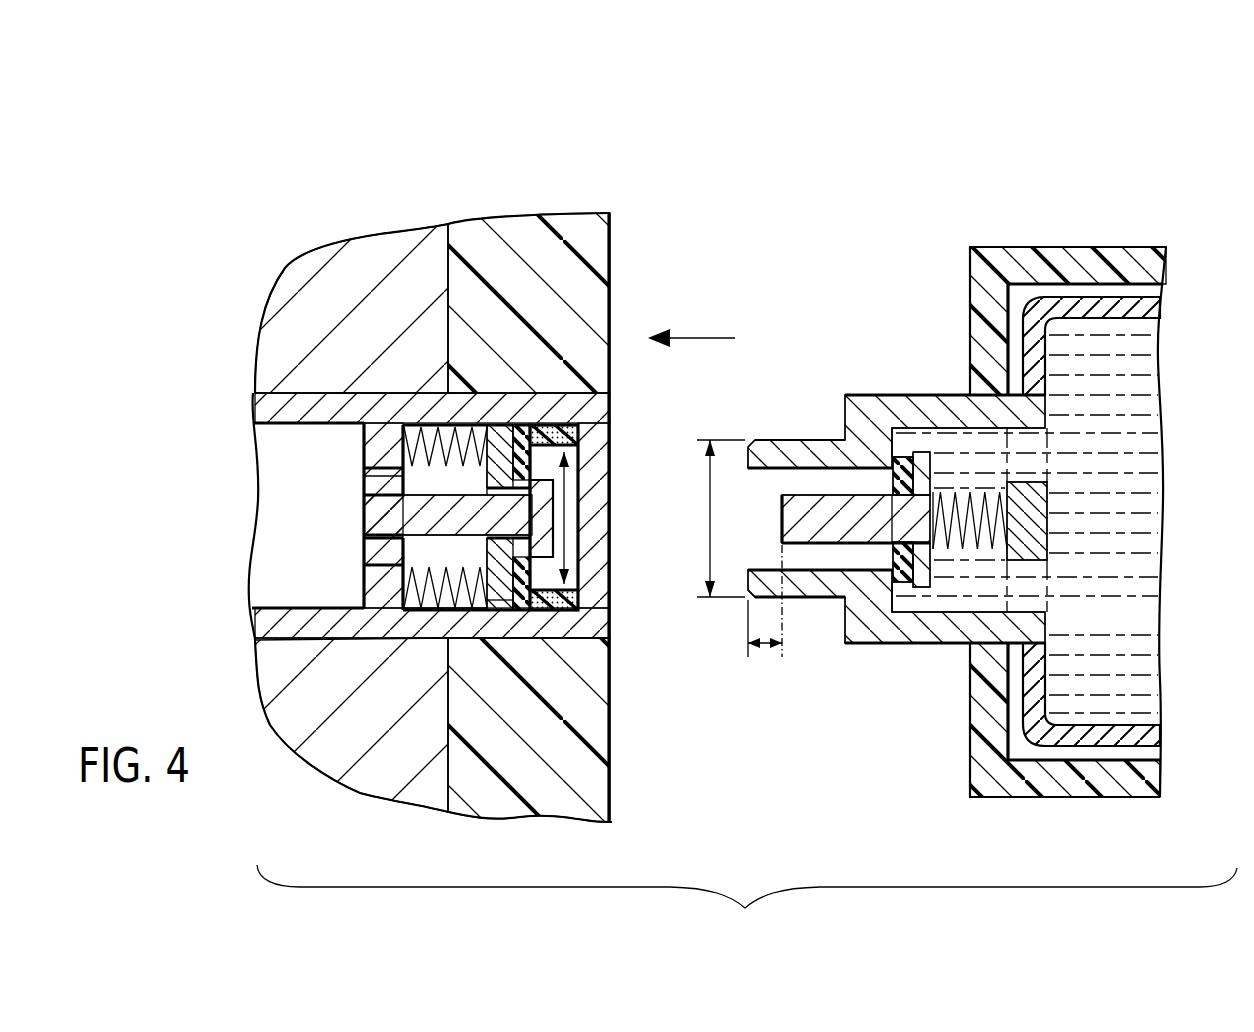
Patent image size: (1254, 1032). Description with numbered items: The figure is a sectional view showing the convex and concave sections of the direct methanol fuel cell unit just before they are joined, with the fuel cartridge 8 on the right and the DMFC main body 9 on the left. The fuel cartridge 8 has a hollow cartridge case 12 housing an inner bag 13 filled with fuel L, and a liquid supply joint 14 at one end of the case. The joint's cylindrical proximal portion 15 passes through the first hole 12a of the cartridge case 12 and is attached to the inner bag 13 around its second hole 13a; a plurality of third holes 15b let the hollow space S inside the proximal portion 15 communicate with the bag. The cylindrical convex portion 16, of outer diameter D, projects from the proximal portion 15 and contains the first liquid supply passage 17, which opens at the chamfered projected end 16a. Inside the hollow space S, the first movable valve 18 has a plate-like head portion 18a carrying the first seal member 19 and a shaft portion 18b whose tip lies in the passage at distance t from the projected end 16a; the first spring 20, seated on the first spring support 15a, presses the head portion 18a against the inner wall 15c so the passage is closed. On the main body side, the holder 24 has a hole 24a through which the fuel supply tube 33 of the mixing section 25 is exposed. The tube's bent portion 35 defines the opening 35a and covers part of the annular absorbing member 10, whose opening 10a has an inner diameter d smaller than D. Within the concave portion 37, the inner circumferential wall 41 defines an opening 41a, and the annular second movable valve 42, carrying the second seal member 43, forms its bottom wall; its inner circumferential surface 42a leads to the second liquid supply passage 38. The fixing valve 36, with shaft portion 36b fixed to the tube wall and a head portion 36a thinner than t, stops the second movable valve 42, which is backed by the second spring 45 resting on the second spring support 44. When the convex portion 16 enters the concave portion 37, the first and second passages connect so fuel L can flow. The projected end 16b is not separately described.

The fuel cartridge 8 is at (1172, 162).
The DMFC main body 9 is at (399, 128).
The absorbing member 10 is at (560, 424).
The opening 10a is at (573, 586).
The cartridge case 12 is at (1072, 247).
The first hole 12a is at (990, 650).
The inner bag 13 is at (1136, 296).
The second hole 13a is at (1047, 657).
The liquid supply joint 14 is at (867, 393).
The proximal portion 15 is at (917, 393).
The first spring support 15a is at (1035, 497).
The third holes 15b is at (1040, 447).
The inner wall 15c is at (915, 600).
The convex portion 16 is at (815, 441).
The projected end 16a is at (748, 583).
The flange end face 16b is at (822, 600).
The first liquid supply passage 17 is at (762, 490).
The first movable valve 18 is at (867, 494).
The head portion 18a is at (920, 456).
The shaft portion 18b is at (873, 543).
The first seal member 19 is at (900, 456).
The first spring 20 is at (972, 548).
The holder 24 is at (552, 219).
The hole 24a is at (575, 388).
The mixing section 25 is at (327, 247).
The fuel supply tube 33 is at (493, 393).
The bent portion 35 is at (598, 625).
The opening 35a is at (588, 592).
The fixing valve 36 is at (472, 501).
The head portion 36a is at (545, 494).
The shaft portion 36b is at (374, 513).
The concave portion 37 is at (545, 421).
The second liquid supply passage 38 is at (378, 560).
The inner circumferential wall 41 is at (552, 610).
The opening 41a is at (575, 640).
The second movable valve 42 is at (497, 610).
The inner circumferential surface 42a is at (497, 600).
The second seal member 43 is at (522, 422).
The second spring support 44 is at (378, 584).
The second spring 45 is at (483, 540).
The hollow space S is at (984, 443).
The fuel L is at (1130, 546).
The outer diameter D is at (706, 497).
The inner diameter d is at (566, 516).
The distance t is at (765, 648).